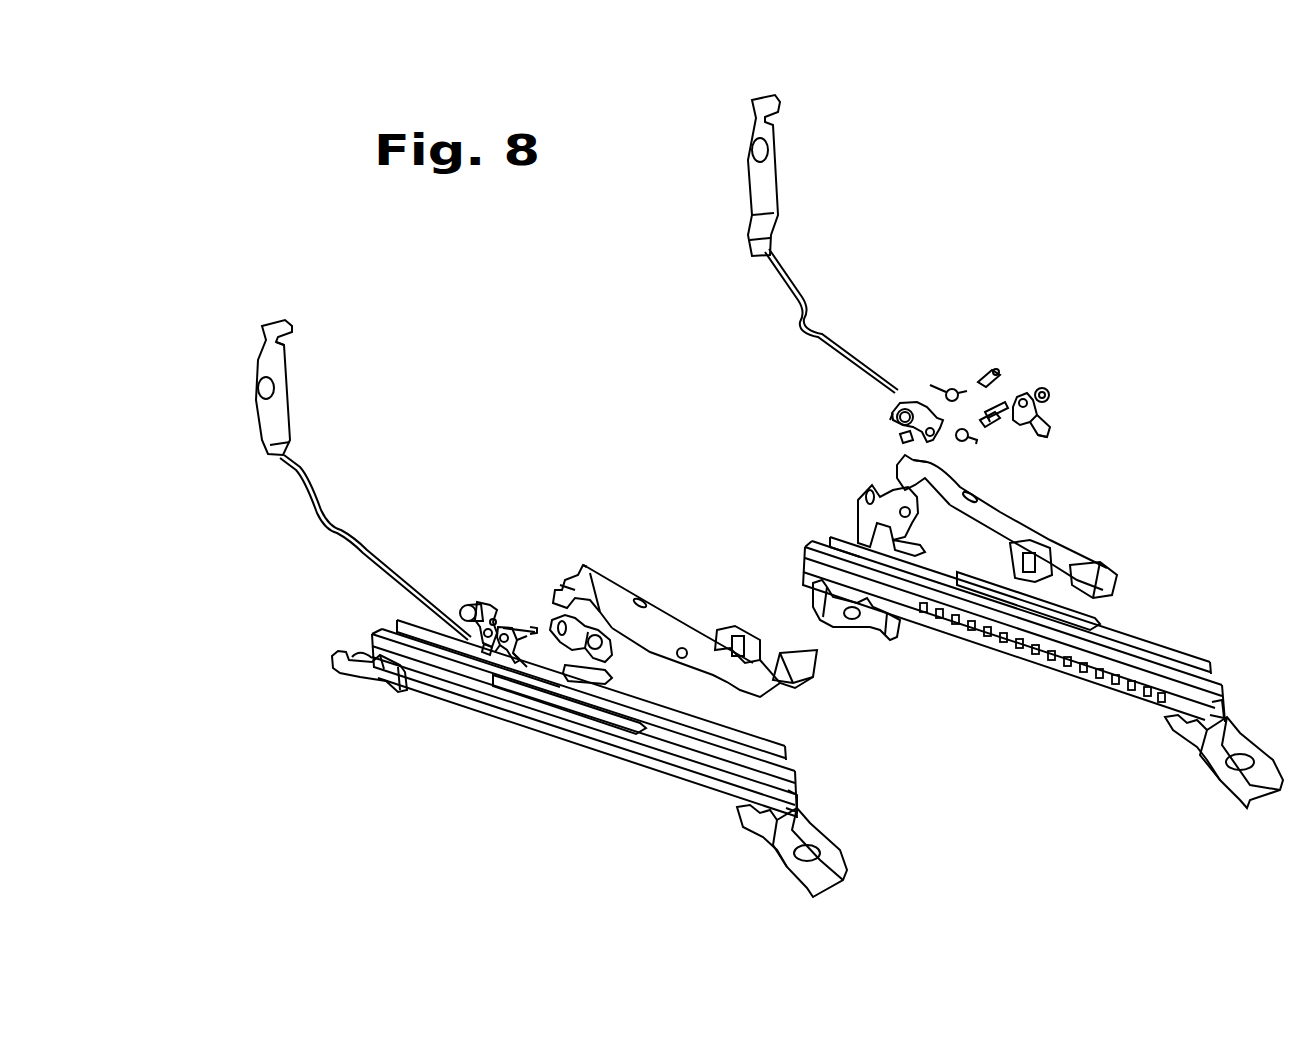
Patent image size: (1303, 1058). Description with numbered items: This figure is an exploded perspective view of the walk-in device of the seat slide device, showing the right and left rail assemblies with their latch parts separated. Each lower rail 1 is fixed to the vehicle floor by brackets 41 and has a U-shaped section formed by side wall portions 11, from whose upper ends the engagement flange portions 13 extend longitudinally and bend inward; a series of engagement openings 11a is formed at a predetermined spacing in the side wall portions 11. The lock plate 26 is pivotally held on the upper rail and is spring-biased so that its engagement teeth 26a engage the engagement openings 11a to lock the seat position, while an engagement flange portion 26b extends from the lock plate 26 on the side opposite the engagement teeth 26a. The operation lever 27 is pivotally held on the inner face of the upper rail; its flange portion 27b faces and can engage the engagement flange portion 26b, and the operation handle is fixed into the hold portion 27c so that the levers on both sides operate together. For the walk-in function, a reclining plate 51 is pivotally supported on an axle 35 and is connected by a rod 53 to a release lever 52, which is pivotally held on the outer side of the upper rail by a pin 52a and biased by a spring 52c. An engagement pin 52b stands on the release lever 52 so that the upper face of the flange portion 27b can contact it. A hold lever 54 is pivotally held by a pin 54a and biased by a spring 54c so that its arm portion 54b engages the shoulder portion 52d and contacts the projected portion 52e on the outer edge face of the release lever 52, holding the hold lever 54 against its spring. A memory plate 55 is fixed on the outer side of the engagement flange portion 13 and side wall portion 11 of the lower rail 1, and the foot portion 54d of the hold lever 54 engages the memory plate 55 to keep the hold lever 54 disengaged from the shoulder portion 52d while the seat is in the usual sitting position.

The lower rail 1 is at (689, 804).
The side wall portion 11 is at (657, 760).
The engagement opening 11a is at (1028, 660).
The engagement flange portion 13 is at (757, 760).
The lock plate 26 is at (650, 628).
The engagement tooth 26a is at (603, 683).
The engagement flange portion 26b is at (623, 587).
The operation lever 27 is at (700, 652).
The flange portion 27b is at (577, 570).
The hold portion 27c is at (790, 680).
The axle 35 is at (260, 390).
The bracket 41 is at (367, 672).
The reclining plate 51 is at (263, 357).
The release lever 52 is at (490, 587).
The pin 52a is at (467, 628).
The engagement pin 52b is at (487, 650).
The spring 52c is at (460, 600).
The shoulder portion 52d is at (500, 600).
The projected portion 52e is at (887, 432).
The rod 53 is at (313, 507).
The hold lever 54 is at (517, 670).
The pin 54a is at (543, 597).
The arm portion 54b is at (497, 650).
The spring 54c is at (532, 600).
The foot portion 54d is at (507, 660).
The memory plate 55 is at (610, 722).